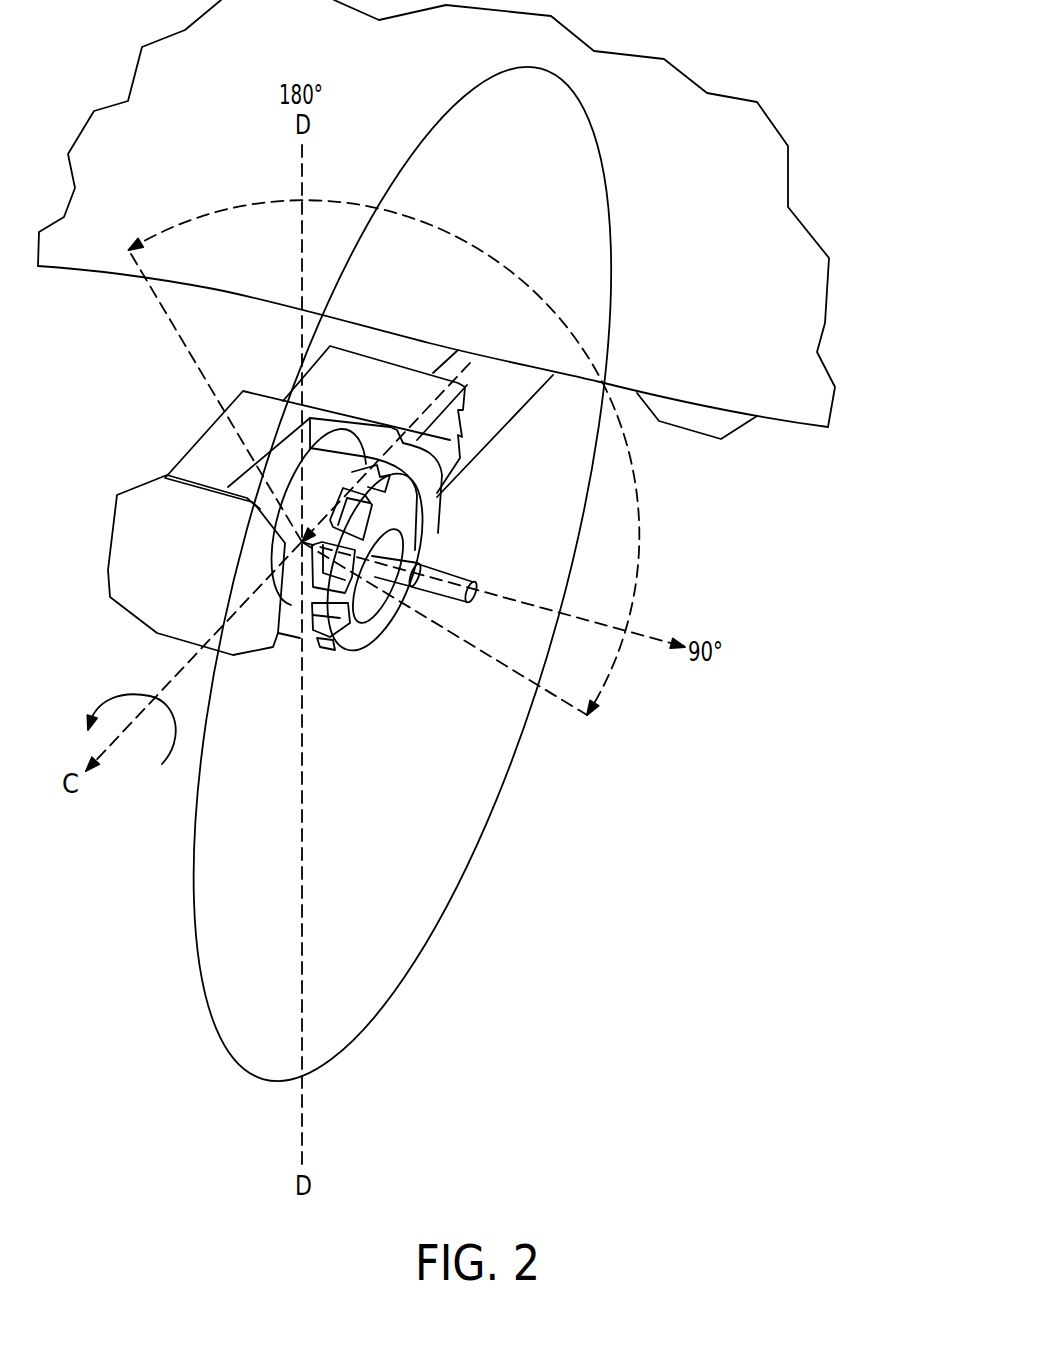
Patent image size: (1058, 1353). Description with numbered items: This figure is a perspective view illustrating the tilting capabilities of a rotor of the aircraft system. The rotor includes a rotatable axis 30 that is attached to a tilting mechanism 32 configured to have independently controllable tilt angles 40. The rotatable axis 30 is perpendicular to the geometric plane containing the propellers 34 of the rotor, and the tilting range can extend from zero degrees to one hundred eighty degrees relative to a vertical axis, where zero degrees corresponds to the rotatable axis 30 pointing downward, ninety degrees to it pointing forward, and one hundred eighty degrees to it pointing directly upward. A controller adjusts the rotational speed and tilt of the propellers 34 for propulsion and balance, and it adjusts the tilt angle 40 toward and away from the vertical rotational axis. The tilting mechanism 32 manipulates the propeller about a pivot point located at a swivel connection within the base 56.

The rotatable axis 30 is at (462, 560).
The tilting mechanism 32 is at (365, 628).
The propellers 34 is at (203, 921).
The tilt angle 40 is at (638, 575).
The base 56 is at (164, 555).